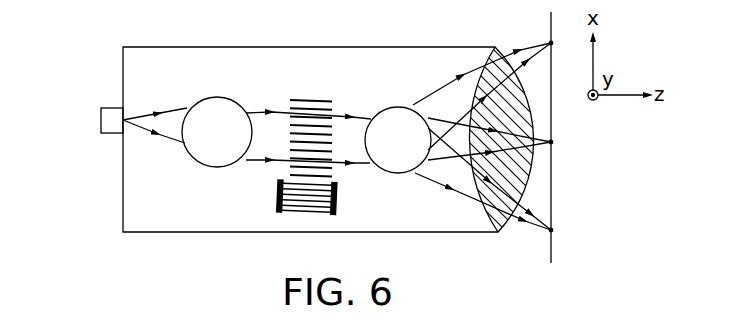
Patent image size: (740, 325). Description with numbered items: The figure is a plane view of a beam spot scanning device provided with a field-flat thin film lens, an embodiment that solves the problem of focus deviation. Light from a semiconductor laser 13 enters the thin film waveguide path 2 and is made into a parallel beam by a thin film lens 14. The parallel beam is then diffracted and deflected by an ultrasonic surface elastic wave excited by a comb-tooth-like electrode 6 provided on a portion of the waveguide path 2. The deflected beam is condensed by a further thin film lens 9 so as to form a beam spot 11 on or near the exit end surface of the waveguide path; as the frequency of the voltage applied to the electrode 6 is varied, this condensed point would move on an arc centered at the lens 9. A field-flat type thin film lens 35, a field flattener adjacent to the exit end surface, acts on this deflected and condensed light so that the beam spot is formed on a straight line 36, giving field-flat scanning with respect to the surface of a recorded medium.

The thin film waveguide path 2 is at (178, 232).
The comb-tooth-like electrode 6 is at (337, 208).
The thin film lens 9 is at (393, 108).
The beam spot 11 is at (551, 142).
The semiconductor laser 13 is at (101, 121).
The thin film lens 14 is at (216, 98).
The field-flat type thin film lens 35 is at (523, 178).
The straight line 36 is at (551, 110).